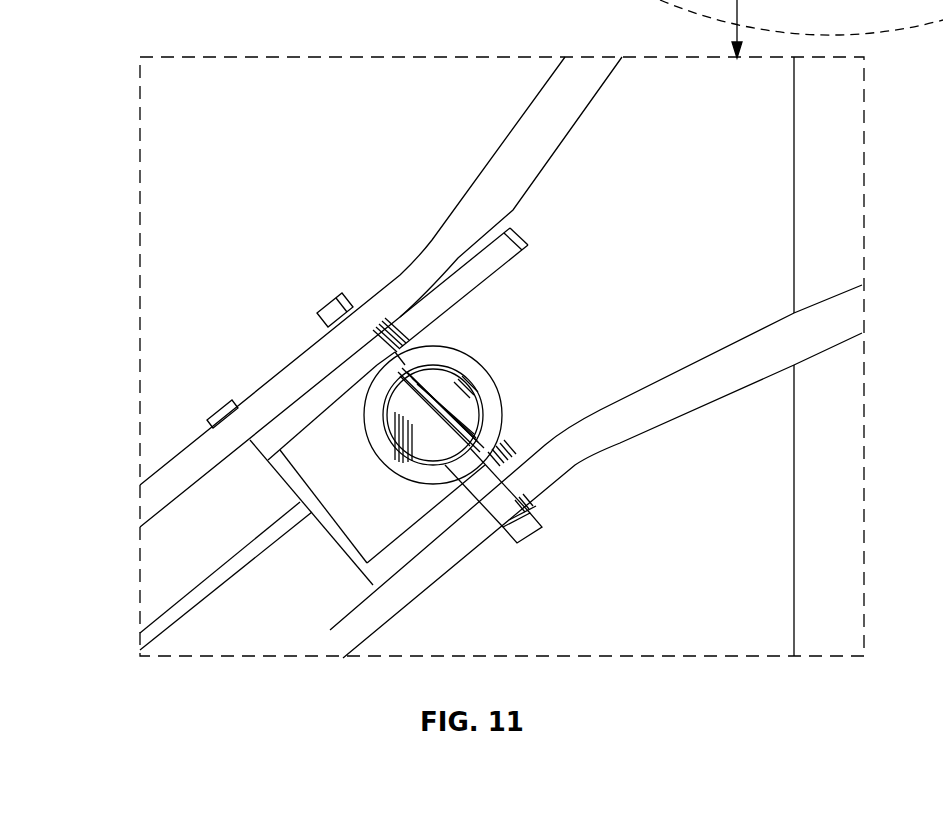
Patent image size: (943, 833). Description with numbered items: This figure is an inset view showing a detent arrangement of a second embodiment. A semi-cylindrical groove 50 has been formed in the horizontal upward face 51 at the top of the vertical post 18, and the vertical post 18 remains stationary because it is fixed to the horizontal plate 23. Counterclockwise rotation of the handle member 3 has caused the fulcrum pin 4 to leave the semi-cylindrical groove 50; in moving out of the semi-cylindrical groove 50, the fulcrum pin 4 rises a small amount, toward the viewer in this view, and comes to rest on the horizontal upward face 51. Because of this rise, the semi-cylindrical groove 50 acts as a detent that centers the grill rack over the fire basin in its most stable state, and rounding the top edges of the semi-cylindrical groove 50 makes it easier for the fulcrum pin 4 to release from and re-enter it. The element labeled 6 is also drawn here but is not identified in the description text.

The handle member 3 is at (283, 258).
The fulcrum pin 4 is at (432, 420).
The strut 6 is at (387, 452).
The vertical post 18 is at (385, 402).
The horizontal plate 23 is at (663, 218).
The semi-cylindrical groove 50 is at (439, 440).
The horizontal upward face 51 is at (398, 427).